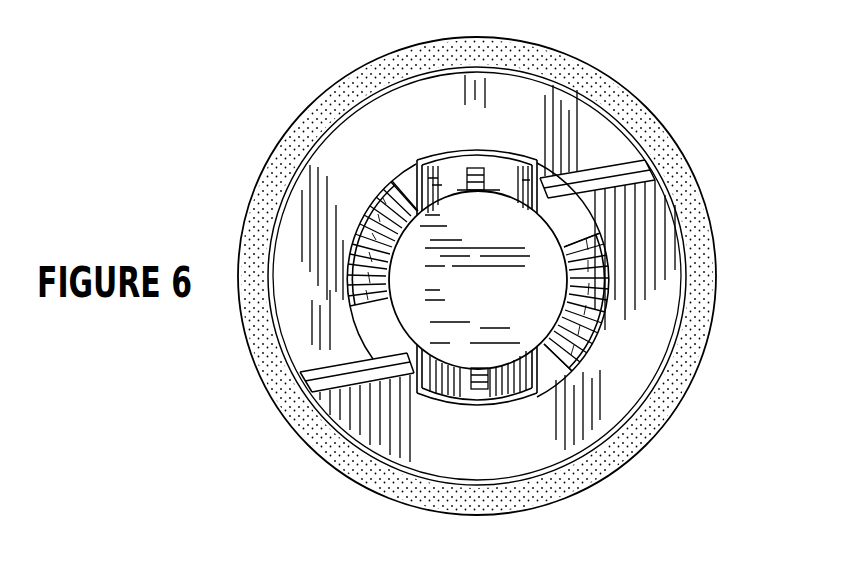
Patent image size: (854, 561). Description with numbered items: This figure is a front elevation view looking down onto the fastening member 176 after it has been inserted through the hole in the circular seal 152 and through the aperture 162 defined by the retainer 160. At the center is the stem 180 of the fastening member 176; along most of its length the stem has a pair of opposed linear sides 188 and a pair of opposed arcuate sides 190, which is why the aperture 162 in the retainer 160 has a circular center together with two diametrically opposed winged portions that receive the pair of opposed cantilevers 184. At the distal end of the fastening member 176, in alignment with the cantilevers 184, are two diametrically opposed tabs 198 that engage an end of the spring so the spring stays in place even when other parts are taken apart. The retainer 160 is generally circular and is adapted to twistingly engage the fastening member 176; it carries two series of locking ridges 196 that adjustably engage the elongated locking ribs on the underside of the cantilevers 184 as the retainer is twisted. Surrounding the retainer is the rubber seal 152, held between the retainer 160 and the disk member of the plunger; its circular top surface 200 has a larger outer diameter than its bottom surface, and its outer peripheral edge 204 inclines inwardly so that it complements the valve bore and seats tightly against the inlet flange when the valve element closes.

The circular seal 152 is at (670, 413).
The retainer 160 is at (640, 368).
The aperture 162 is at (440, 410).
The fastening member 176 is at (482, 319).
The stem 180 is at (518, 283).
The cantilevers 184 is at (481, 168).
The linear sides 188 is at (427, 265).
The arcuate sides 190 is at (437, 163).
The locking ridges 196 is at (340, 217).
The tabs 198 is at (528, 152).
The circular top surface 200 is at (693, 200).
The outer peripheral edge 204 is at (313, 103).